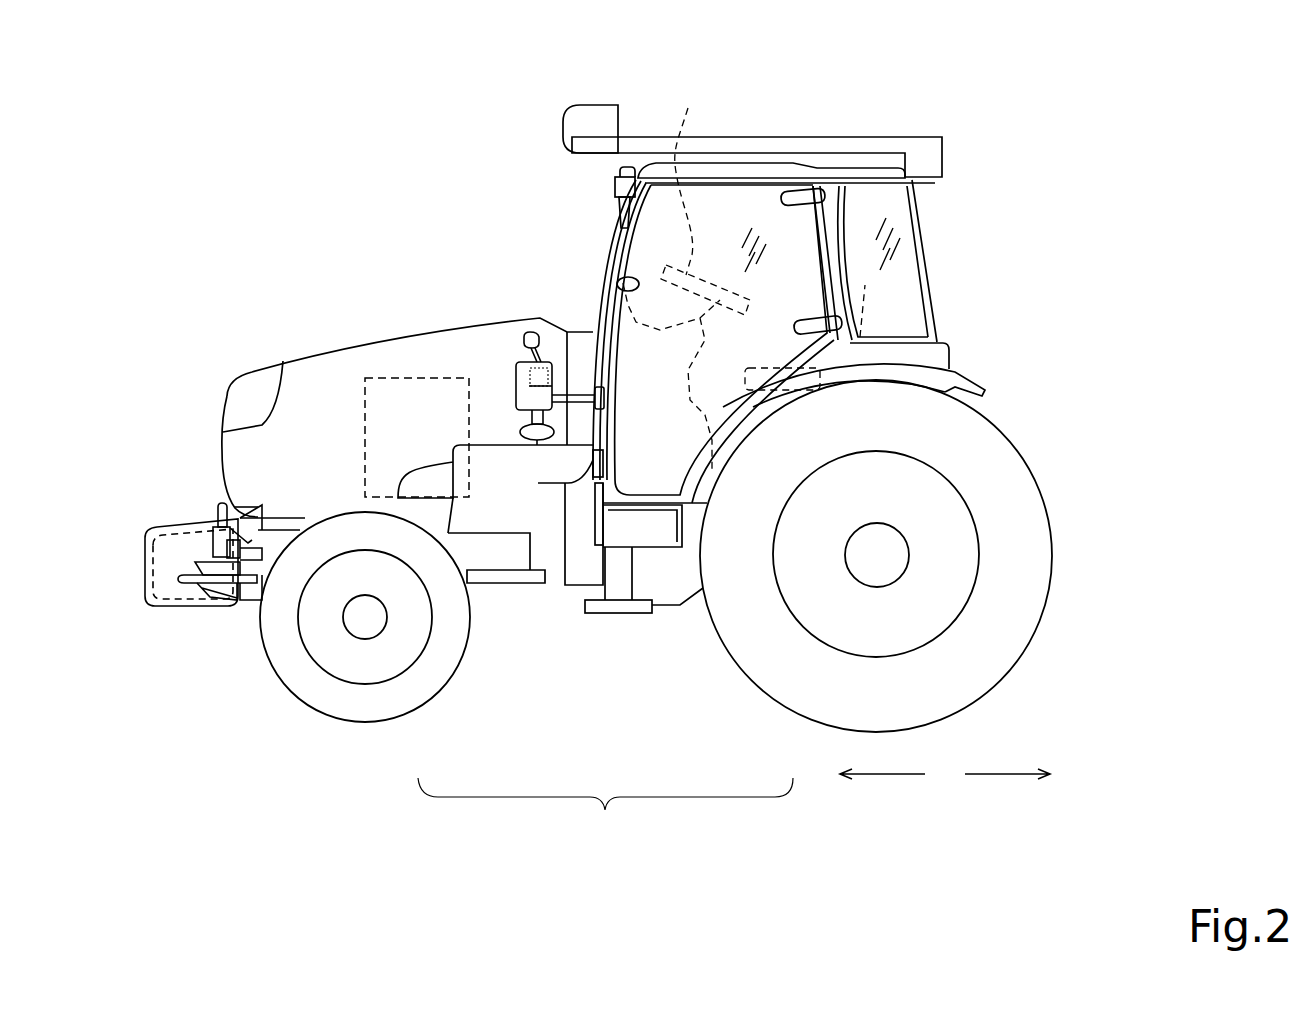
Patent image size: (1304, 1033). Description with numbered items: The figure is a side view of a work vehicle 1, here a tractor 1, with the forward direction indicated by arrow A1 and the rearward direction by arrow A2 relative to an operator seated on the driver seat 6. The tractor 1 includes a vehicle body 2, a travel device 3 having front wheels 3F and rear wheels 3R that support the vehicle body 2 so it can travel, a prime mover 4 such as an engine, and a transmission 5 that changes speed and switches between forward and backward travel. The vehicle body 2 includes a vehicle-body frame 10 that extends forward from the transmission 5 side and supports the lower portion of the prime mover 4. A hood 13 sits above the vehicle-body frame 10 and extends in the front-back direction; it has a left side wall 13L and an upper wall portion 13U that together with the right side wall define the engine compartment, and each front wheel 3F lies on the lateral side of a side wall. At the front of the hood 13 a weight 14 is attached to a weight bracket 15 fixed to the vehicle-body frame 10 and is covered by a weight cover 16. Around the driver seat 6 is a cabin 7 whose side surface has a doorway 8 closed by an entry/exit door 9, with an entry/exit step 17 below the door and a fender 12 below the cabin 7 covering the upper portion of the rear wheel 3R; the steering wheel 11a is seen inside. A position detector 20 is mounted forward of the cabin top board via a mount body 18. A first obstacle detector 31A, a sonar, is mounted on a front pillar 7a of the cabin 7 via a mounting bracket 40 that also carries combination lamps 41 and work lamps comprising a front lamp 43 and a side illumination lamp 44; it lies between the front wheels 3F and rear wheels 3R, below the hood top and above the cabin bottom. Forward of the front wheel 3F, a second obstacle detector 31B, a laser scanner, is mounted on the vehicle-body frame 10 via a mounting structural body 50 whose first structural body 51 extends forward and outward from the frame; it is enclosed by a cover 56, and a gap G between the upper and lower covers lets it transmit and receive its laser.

The work vehicle 1 is at (597, 315).
The vehicle body 2 is at (574, 612).
The travel device 3 is at (605, 810).
The front wheels 3F is at (434, 721).
The rear wheels 3R is at (783, 725).
The prime mover 4 is at (365, 397).
The transmission 5 is at (652, 613).
The driver seat 6 is at (862, 280).
The cabin 7 is at (941, 221).
The front pillar 7a is at (613, 257).
The doorway 8 is at (617, 286).
The entry/exit door 9 is at (785, 276).
The vehicle-body frame 10 is at (503, 582).
The steering wheel 11a is at (686, 274).
The fender 12 is at (950, 372).
The hood 13 is at (407, 357).
The upper wall portion 13U is at (322, 352).
The left side wall 13L is at (288, 383).
The weight 14 is at (176, 608).
The weight bracket 15 is at (245, 512).
The weight cover 16 is at (166, 576).
The entry/exit step 17 is at (628, 615).
The mount body 18 is at (572, 145).
The position detector 20 is at (602, 105).
The first obstacle detector 31A is at (513, 372).
The second obstacle detector 31B is at (220, 525).
The mounting bracket 40 is at (595, 400).
The combination lamp 41 is at (502, 432).
The front lamp 43 is at (527, 332).
The side illumination lamp 44 is at (580, 427).
The mounting structural body 50 is at (250, 585).
The first structural body 51 is at (263, 503).
The cover 56 is at (222, 602).
The gap G is at (172, 566).
The arrow A1 is at (888, 778).
The arrow A2 is at (1000, 778).